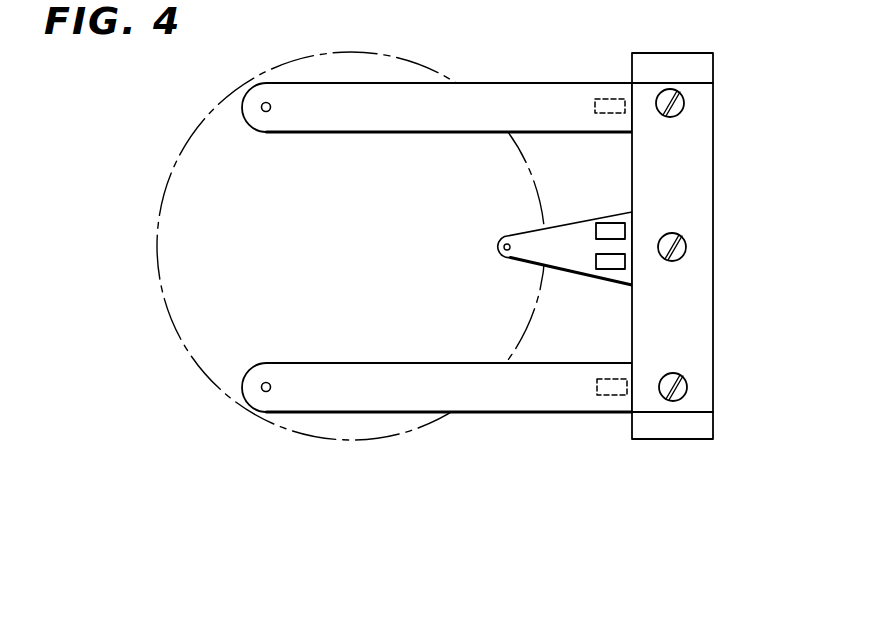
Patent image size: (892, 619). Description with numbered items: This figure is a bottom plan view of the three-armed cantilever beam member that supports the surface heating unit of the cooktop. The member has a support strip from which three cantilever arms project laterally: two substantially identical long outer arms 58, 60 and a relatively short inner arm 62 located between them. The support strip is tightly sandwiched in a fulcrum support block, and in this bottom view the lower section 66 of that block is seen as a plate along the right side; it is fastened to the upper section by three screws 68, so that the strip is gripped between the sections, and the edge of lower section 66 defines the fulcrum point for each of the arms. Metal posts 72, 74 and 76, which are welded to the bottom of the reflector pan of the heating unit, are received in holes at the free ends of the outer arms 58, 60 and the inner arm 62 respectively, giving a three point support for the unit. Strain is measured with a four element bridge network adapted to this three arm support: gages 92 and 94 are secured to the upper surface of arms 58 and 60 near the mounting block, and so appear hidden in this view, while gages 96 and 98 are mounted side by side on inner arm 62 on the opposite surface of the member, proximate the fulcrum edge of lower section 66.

The outer arm 58 is at (475, 90).
The outer arm 60 is at (518, 401).
The inner arm 62 is at (533, 253).
The lower section 66 is at (703, 157).
The screws 68 is at (685, 104).
The metal post 72 is at (271, 107).
The metal post 74 is at (271, 387).
The metal post 76 is at (500, 242).
The gage 92 is at (599, 98).
The gage 94 is at (600, 398).
The gage 96 is at (602, 223).
The gage 98 is at (607, 269).